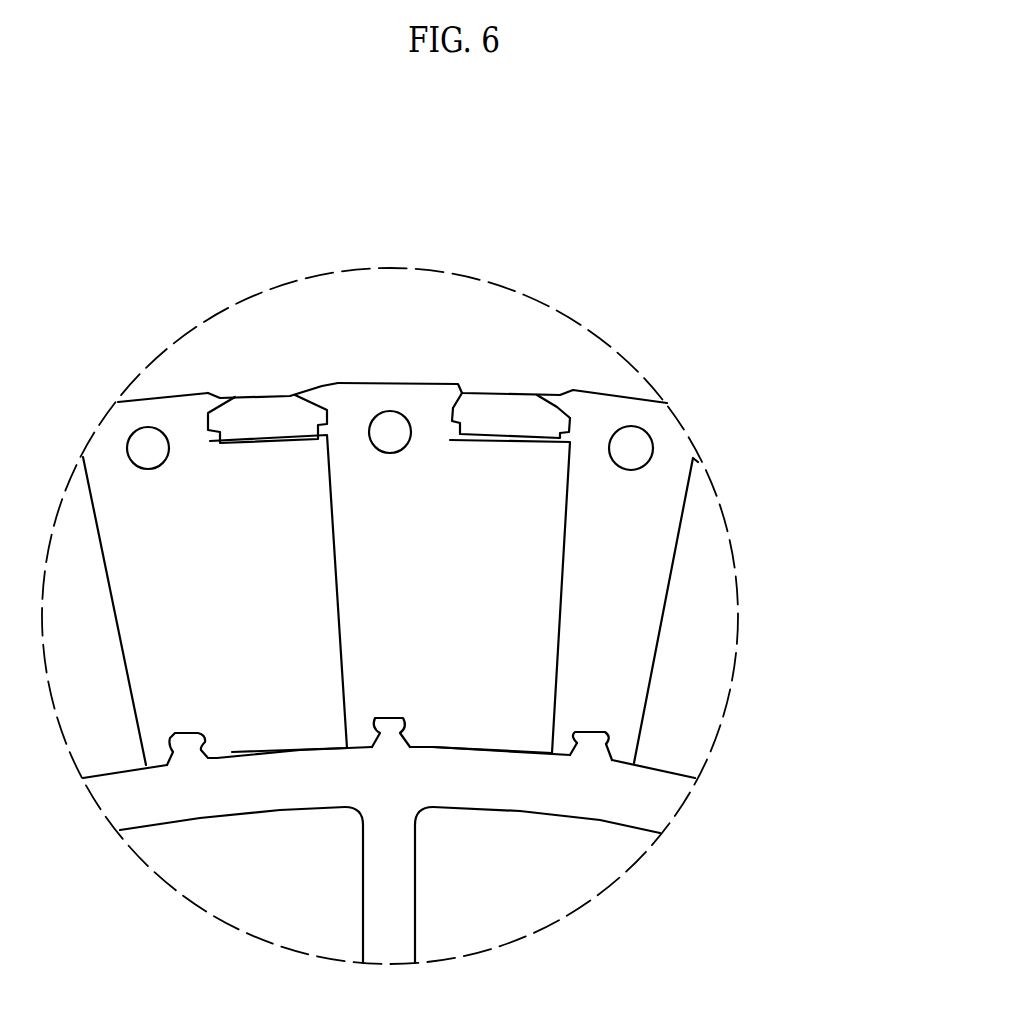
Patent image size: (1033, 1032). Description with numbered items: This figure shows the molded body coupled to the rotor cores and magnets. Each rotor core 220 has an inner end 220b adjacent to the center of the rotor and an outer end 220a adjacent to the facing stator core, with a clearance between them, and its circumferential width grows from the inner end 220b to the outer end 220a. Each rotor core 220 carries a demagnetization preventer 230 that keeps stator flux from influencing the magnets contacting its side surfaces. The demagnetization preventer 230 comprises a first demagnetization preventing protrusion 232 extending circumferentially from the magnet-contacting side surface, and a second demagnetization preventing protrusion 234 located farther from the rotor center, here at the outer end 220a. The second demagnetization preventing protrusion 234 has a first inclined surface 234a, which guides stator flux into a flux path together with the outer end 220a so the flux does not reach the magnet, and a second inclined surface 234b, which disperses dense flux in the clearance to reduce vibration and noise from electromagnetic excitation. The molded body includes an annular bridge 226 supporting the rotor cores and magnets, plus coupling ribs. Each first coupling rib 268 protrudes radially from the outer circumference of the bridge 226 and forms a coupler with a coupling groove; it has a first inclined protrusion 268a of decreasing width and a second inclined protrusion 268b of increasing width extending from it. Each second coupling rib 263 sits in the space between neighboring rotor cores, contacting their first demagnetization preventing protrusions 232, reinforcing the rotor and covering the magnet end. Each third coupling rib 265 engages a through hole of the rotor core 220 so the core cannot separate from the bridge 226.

The rotor core 220 is at (390, 487).
The outer end 220a is at (273, 313).
The inner end 220b is at (389, 863).
The annular bridge 226 is at (344, 903).
The demagnetization preventer 230 is at (578, 450).
The first demagnetization preventing protrusion 232 is at (538, 521).
The second demagnetization preventing protrusion 234 is at (543, 293).
The first inclined surface 234a is at (547, 341).
The second inclined surface 234b is at (548, 310).
The second coupling rib 263 is at (238, 508).
The third coupling rib 265 is at (395, 331).
The first coupling rib 268 is at (537, 748).
The first inclined protrusion 268a is at (699, 770).
The second inclined protrusion 268b is at (700, 720).